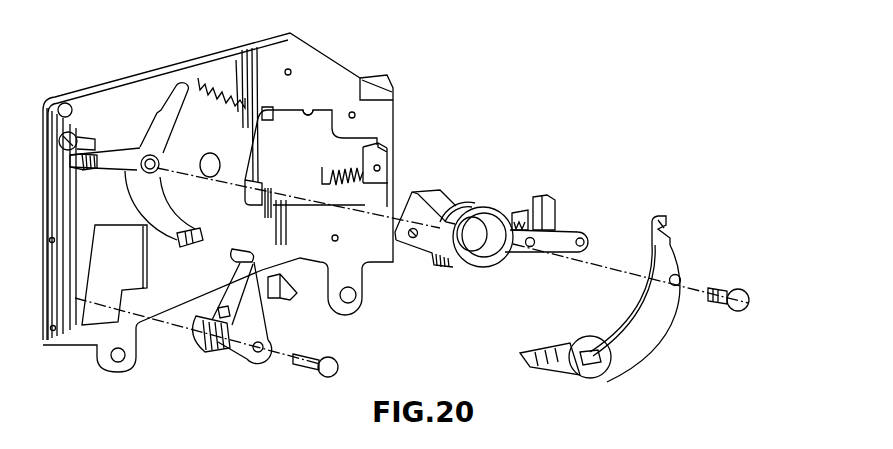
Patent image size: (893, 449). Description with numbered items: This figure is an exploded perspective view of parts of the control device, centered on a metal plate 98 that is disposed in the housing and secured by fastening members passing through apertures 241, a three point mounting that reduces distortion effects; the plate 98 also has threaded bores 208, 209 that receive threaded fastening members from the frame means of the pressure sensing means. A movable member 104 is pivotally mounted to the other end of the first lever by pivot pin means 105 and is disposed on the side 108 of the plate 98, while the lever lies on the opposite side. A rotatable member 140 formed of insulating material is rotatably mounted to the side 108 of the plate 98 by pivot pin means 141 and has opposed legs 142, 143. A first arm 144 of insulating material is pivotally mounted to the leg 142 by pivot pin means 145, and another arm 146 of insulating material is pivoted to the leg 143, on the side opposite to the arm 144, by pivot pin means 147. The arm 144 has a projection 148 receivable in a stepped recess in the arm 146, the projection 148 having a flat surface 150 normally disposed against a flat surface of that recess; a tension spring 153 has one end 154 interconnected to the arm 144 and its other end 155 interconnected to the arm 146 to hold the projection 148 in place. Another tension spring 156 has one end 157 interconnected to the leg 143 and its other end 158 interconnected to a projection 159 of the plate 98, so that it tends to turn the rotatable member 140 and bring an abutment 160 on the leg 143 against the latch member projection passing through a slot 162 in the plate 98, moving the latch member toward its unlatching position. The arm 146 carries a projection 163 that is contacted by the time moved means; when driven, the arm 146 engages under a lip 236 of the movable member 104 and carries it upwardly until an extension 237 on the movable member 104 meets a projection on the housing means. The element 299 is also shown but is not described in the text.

The plate 98 is at (317, 63).
The movable member 104 is at (242, 340).
The pivot pin means 105 is at (307, 364).
The side 108 is at (248, 50).
The rotatable member 140 is at (457, 202).
The pivot pin means 141 is at (480, 213).
The leg 142 is at (428, 238).
The leg 143 is at (558, 247).
The first arm 144 is at (170, 142).
The pivot pin means 145 is at (73, 132).
The arm 146 is at (662, 328).
The pivot pin means 147 is at (740, 288).
The projection 148 is at (193, 245).
The flat surface 150 is at (188, 248).
The tension spring 153 is at (220, 92).
The end 154 is at (197, 83).
The end 155 is at (243, 107).
The tension spring 156 is at (360, 173).
The end 157 is at (322, 167).
The end 158 is at (387, 174).
The projection 159 is at (387, 148).
The abutment 160 is at (555, 205).
The slot 162 is at (309, 111).
The projection 163 is at (594, 368).
The threaded bore 208 is at (50, 240).
The threaded bore 209 is at (50, 335).
The lip 236 is at (283, 300).
The extension 237 is at (198, 340).
The apertures 241 is at (66, 102).
The pad 299 is at (103, 170).